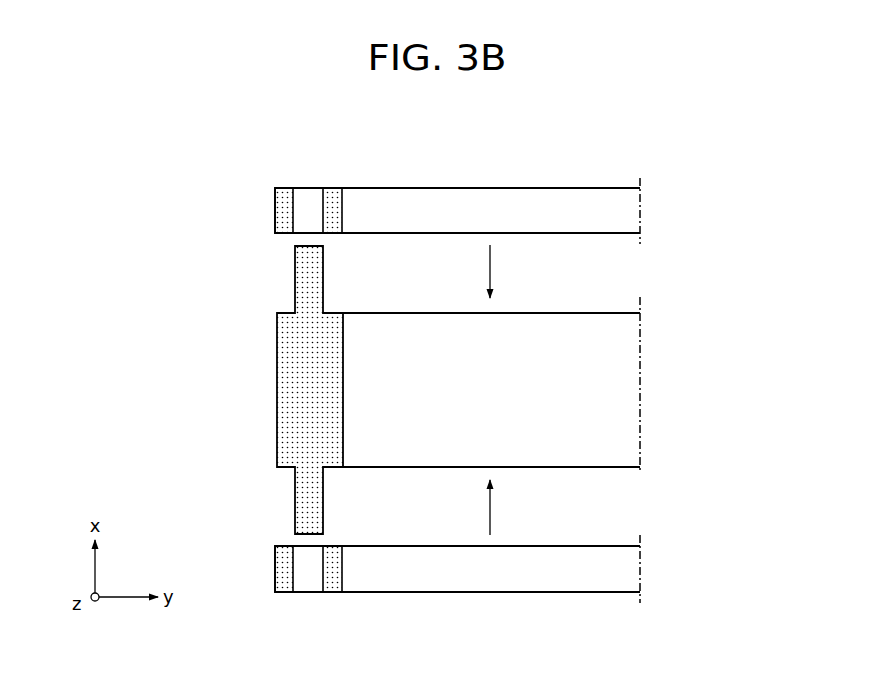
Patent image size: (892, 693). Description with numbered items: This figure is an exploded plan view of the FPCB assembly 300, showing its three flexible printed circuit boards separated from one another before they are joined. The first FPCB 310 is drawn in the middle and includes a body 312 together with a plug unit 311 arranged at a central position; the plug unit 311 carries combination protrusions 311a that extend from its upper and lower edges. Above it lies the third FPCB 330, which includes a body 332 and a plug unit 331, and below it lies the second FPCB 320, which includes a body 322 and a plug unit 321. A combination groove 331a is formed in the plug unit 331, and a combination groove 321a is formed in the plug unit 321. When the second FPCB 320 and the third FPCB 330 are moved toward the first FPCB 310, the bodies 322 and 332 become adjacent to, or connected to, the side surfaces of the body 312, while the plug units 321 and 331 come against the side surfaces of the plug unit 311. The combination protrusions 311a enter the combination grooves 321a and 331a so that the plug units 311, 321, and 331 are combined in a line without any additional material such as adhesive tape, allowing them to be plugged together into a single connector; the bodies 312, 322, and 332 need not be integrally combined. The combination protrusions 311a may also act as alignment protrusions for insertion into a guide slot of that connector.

The FPCB assembly 300 is at (200, 328).
The first FPCB 310 is at (648, 393).
The plug unit 311 is at (281, 388).
The combination protrusion 311a is at (300, 275).
The body 312 is at (469, 402).
The second FPCB 320 is at (648, 571).
The plug unit 321 is at (335, 585).
The combination groove 321a is at (313, 576).
The body 322 is at (546, 578).
The third FPCB 330 is at (648, 211).
The plug unit 331 is at (338, 192).
The combination groove 331a is at (313, 205).
The body 332 is at (542, 197).